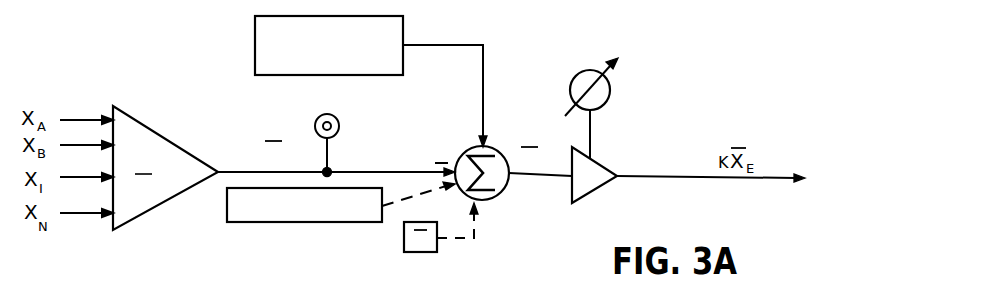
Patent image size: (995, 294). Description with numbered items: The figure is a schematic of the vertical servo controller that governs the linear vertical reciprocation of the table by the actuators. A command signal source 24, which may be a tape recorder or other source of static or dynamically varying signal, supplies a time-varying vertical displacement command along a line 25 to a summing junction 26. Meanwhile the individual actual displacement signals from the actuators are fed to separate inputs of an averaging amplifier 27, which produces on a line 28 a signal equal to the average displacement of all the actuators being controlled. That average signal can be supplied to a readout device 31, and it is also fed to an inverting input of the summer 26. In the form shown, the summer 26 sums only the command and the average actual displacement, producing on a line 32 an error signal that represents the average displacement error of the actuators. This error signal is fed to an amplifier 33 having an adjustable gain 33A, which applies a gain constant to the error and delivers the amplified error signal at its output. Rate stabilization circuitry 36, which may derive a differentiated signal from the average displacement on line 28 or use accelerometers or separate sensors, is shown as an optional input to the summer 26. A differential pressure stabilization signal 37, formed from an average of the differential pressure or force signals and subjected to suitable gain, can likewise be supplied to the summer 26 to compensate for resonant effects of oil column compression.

The command signal source 24 is at (403, 18).
The line 25 is at (487, 60).
The summing junction 26 is at (500, 195).
The averaging amplifier 27 is at (157, 197).
The line 28 is at (270, 170).
The readout device 31 is at (349, 114).
The line 32 is at (548, 177).
The amplifier 33 is at (593, 160).
The adjustable gain 33A is at (609, 94).
The rate stabilization circuitry 36 is at (228, 222).
The F signal source 37 is at (403, 238).